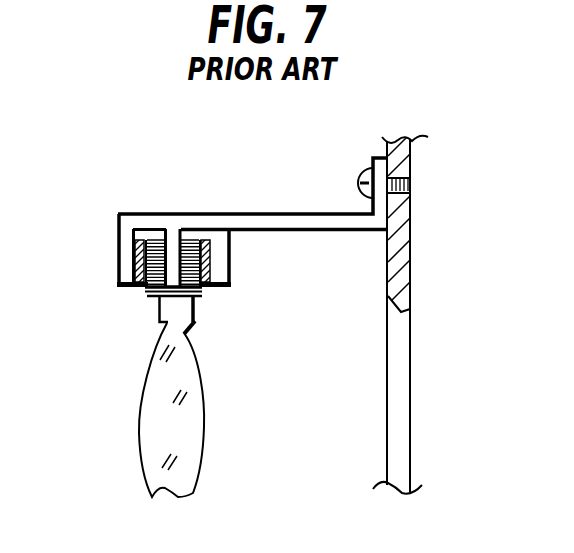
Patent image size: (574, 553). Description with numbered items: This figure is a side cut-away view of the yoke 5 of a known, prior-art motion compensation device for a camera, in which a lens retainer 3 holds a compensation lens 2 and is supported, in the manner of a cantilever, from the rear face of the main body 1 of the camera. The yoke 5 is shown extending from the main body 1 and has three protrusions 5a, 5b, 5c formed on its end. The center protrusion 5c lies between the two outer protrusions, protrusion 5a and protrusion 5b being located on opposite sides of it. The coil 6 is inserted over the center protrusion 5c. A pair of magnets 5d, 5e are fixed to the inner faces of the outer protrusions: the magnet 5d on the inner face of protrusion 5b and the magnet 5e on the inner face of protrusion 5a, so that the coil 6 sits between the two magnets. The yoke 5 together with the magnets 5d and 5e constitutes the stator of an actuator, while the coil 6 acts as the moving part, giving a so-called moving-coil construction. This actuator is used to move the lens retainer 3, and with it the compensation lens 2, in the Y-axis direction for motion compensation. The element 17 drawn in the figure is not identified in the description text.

The main body 1 is at (413, 167).
The compensation lens 2 is at (158, 397).
The lens retainer 3 is at (166, 308).
The yoke 5 is at (200, 213).
The protrusion 5a is at (232, 272).
The protrusion 5b is at (124, 262).
The center protrusion 5c is at (172, 258).
The magnet 5d is at (128, 245).
The magnet 5e is at (218, 255).
The coil 6 is at (201, 292).
The screw 17 is at (359, 174).